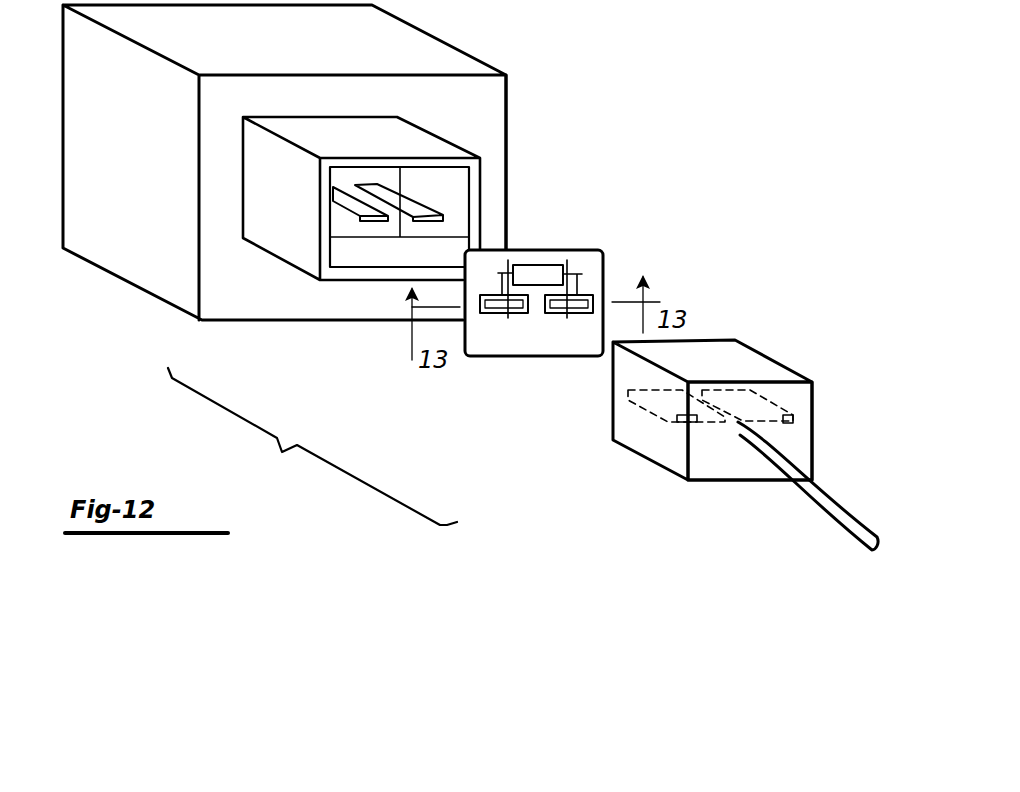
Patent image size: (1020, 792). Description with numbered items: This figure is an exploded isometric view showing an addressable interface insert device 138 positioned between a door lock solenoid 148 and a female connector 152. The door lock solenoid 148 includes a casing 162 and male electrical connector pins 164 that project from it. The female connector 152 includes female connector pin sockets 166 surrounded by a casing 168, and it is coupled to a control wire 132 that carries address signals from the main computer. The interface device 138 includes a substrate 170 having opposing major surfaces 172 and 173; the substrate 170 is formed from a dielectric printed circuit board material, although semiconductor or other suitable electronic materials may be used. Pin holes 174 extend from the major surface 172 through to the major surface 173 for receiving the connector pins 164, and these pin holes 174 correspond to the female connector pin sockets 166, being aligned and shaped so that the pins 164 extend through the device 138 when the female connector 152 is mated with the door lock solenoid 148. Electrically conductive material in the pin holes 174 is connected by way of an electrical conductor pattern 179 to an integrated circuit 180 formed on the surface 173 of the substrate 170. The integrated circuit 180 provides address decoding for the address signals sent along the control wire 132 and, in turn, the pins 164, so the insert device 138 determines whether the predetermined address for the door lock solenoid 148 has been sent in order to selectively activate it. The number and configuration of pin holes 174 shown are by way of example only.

The control wire 132 is at (818, 496).
The addressable interface insert device 138 is at (680, 256).
The door lock solenoid 148 is at (462, 32).
The female connector 152 is at (759, 339).
The casing 162 is at (477, 124).
The male electrical connector pins 164 is at (430, 221).
The female connector pin sockets 166 is at (741, 423).
The casing 168 is at (803, 401).
The substrate 170 is at (582, 276).
The major surface 172 is at (464, 254).
The major surface 173 is at (510, 345).
The pin holes 174 is at (578, 316).
The electrical conductor pattern 179 is at (502, 258).
The integrated circuit 180 is at (543, 272).